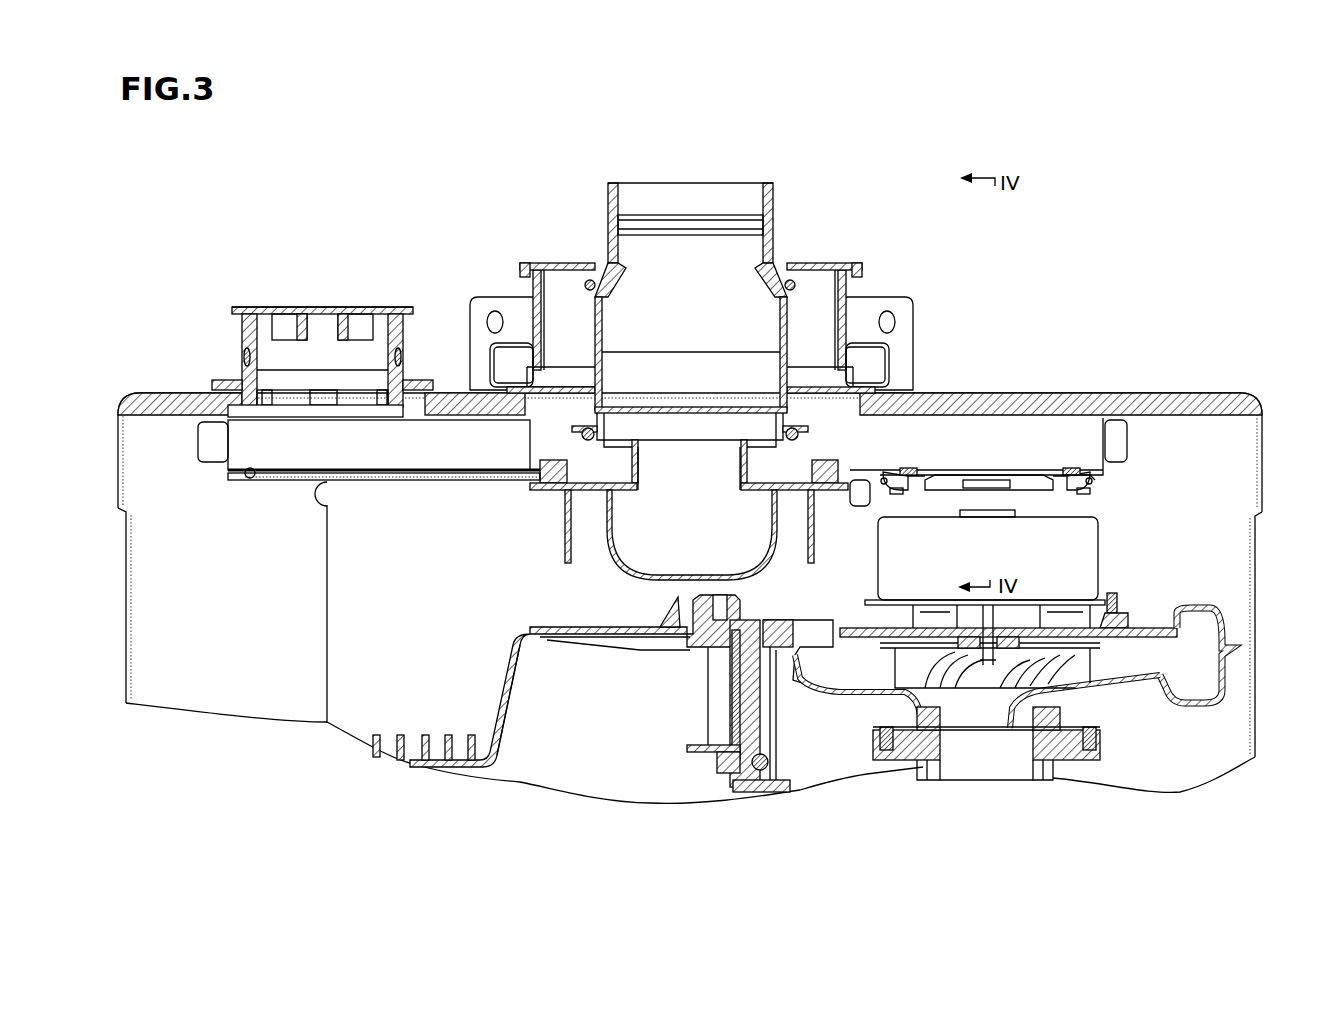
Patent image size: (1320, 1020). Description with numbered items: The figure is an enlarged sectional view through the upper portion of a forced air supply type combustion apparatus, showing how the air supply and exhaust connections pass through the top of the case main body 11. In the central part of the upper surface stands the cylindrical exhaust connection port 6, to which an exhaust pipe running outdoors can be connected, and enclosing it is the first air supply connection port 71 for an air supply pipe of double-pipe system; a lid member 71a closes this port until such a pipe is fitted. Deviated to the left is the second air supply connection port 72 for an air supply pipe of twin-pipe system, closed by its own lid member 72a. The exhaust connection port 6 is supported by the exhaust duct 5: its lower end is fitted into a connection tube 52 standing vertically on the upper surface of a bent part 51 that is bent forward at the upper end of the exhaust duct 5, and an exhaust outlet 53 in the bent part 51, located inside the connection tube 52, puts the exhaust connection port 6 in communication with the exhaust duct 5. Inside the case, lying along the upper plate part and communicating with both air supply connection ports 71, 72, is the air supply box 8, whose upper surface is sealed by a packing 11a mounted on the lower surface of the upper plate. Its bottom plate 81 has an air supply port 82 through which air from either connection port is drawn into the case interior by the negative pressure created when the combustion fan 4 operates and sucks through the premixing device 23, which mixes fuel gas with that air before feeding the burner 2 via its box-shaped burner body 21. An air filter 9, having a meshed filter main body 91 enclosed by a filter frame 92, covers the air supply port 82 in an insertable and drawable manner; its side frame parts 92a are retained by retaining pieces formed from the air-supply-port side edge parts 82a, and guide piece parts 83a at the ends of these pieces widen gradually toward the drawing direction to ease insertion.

The burner 2 is at (513, 630).
The burner body 21 is at (497, 698).
The combustion fan 4 is at (1150, 628).
The premixing device 23 is at (1060, 772).
The exhaust duct 5 is at (340, 607).
The bent part 51 is at (612, 566).
The connection tube 52 is at (590, 448).
The exhaust outlet 53 is at (748, 472).
The exhaust connection port 6 is at (790, 318).
The first air supply connection port 71 is at (533, 330).
The lid member 71a is at (573, 263).
The second air supply connection port 72 is at (242, 347).
The lid member 72a is at (291, 307).
The air supply box 8 is at (369, 501).
The bottom plate 81 is at (344, 470).
The air supply port 82 is at (920, 468).
The air-supply-port side edge parts 82a is at (906, 468).
The guide piece parts 83a is at (895, 495).
The air filter 9 is at (1036, 456).
The filter main body 91 is at (1020, 478).
The filter frame 92 is at (1087, 467).
The side frame parts 92a is at (880, 477).
The case main body 11 is at (705, 591).
The packing 11a is at (1195, 416).